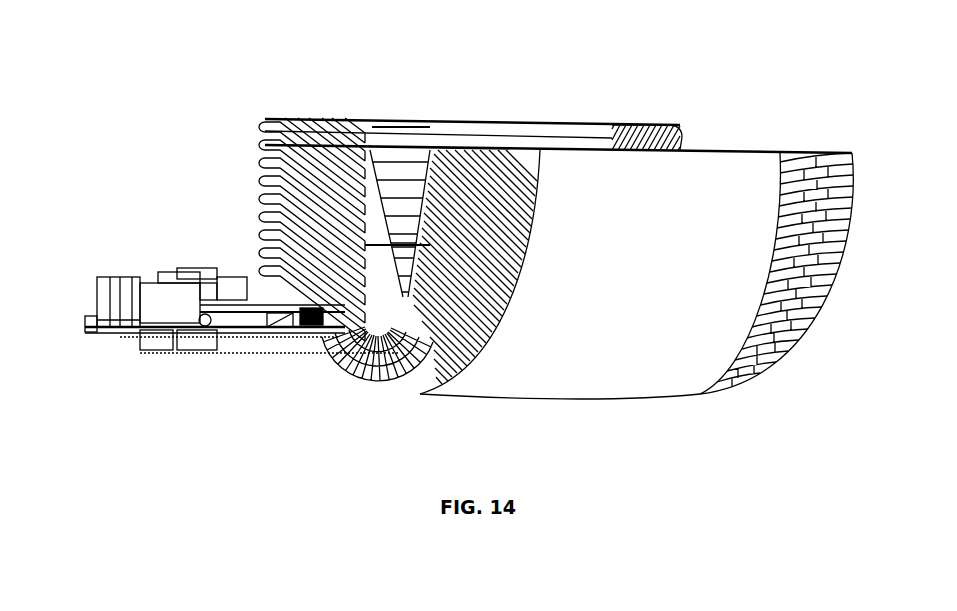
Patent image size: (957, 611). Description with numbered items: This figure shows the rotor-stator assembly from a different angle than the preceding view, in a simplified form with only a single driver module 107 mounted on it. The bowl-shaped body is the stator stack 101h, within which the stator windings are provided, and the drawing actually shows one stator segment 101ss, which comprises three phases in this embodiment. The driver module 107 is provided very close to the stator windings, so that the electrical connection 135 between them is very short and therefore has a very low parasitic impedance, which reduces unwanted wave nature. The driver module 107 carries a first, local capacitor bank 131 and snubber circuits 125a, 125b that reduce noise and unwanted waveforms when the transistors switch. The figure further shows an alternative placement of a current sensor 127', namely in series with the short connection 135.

The stator segment 101ss is at (728, 90).
The stator stack 101h is at (663, 357).
The first capacitor bank 131 is at (142, 289).
The snubber circuit 125a is at (222, 343).
The current sensor 127' is at (272, 355).
The electrical connection 135 is at (337, 328).
The driver module 107 is at (113, 322).